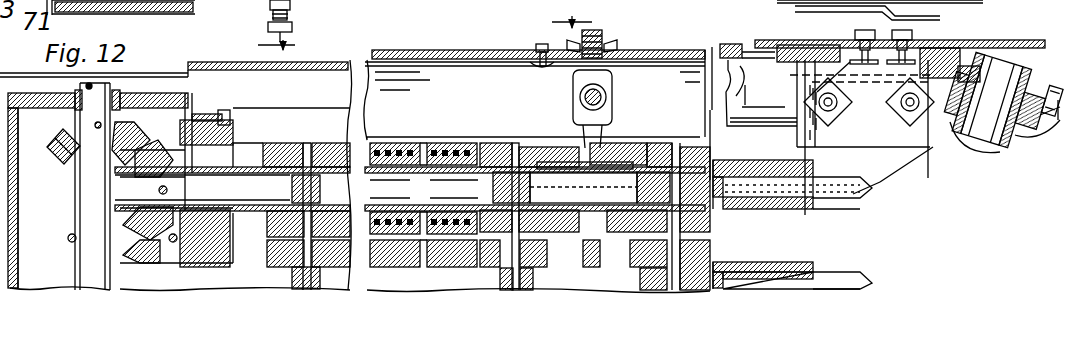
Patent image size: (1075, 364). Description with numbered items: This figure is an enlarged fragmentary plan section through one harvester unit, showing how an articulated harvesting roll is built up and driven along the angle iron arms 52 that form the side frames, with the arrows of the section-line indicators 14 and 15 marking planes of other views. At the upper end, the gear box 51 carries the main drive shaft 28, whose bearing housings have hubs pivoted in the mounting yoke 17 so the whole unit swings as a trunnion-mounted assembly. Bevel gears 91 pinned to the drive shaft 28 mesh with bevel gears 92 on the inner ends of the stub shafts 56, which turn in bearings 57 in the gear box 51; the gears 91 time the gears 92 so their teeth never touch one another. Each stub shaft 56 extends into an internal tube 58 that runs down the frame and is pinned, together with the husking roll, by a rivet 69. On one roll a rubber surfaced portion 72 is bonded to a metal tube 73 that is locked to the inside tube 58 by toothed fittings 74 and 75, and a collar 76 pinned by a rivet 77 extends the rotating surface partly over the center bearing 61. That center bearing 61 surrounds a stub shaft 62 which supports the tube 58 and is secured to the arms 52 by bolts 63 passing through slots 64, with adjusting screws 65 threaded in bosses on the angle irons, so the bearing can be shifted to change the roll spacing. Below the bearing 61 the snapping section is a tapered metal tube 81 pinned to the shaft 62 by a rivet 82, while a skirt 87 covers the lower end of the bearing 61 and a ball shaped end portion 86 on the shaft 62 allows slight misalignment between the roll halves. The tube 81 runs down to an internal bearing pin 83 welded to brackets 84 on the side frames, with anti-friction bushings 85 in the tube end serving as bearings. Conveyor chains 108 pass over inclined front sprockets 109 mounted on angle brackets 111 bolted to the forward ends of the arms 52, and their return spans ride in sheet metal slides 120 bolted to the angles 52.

The feed direction arrow 14 is at (264, 42).
The feed direction arrow 15 is at (554, 22).
The mounting yoke 17 is at (501, 187).
The main drive shaft 28 is at (93, 267).
The gear box 51 is at (13, 282).
The angle iron arms 52 is at (296, 63).
The stub shaft 56 is at (247, 177).
The bearing 57 is at (243, 183).
The internal tube 58 is at (308, 157).
The center bearing 61 is at (565, 297).
The stub shaft 62 is at (610, 183).
The bolts 63 is at (603, 100).
The slots 64 is at (597, 93).
The adjusting screws 65 is at (298, 30).
The rivet 69 is at (300, 150).
The rubber surfaced portion 72 is at (462, 147).
The metal tube 73 is at (463, 150).
The toothed fitting 74 is at (390, 147).
The toothed fitting 75 is at (483, 160).
The collar 76 is at (562, 157).
The rivet 77 is at (513, 150).
The tapered metal tubes 81 is at (788, 153).
The rivet 82 is at (713, 150).
The internal bearing pin 83 is at (827, 278).
The brackets 84 is at (905, 181).
The anti-friction bushings 85 is at (788, 266).
The ball shaped end portion 86 is at (718, 215).
The skirt 87 is at (650, 157).
The bevel gears 91 is at (47, 147).
The bevel gears 92 is at (155, 150).
The conveyor chains 108 is at (1052, 122).
The front sprockets 109 is at (950, 130).
The angle brackets 111 is at (947, 44).
The sheet metal slides 120 is at (28, 80).